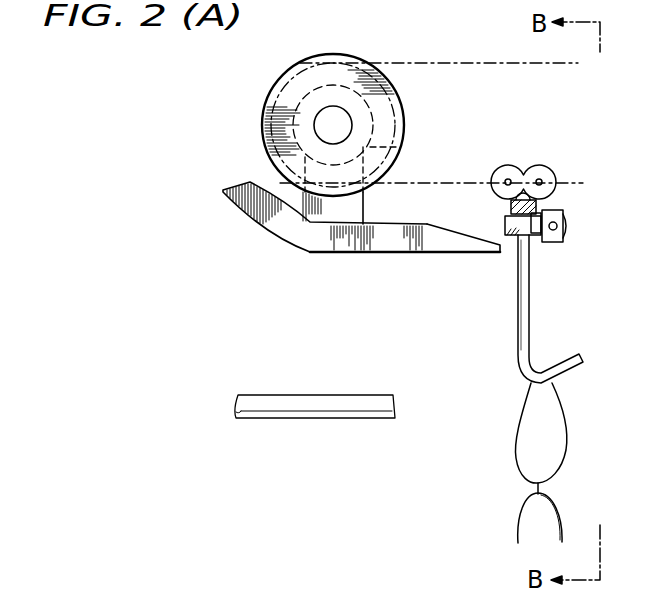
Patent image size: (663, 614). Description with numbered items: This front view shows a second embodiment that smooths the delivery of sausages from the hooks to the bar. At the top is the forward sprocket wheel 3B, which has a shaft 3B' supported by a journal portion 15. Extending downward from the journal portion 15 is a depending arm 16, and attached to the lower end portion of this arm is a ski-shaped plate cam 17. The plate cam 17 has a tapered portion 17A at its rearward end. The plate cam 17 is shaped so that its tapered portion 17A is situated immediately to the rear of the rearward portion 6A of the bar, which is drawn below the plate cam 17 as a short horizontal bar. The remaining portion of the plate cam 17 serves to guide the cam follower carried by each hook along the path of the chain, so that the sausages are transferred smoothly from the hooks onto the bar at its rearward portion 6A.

The journal portion 15 is at (399, 148).
The forward sprocket wheel 3B is at (314, 116).
The shaft 3B' is at (300, 112).
The depending arm 16 is at (353, 207).
The ski-shaped plate cam 17 is at (332, 253).
The tapered portion 17A is at (459, 231).
The rearward portion of bar 6A is at (342, 408).